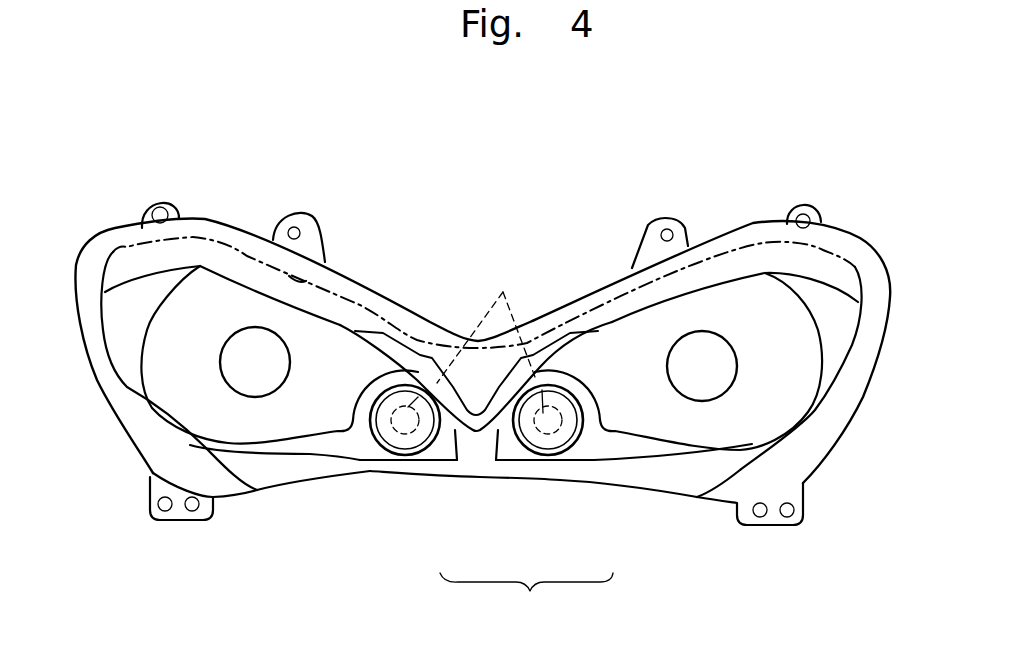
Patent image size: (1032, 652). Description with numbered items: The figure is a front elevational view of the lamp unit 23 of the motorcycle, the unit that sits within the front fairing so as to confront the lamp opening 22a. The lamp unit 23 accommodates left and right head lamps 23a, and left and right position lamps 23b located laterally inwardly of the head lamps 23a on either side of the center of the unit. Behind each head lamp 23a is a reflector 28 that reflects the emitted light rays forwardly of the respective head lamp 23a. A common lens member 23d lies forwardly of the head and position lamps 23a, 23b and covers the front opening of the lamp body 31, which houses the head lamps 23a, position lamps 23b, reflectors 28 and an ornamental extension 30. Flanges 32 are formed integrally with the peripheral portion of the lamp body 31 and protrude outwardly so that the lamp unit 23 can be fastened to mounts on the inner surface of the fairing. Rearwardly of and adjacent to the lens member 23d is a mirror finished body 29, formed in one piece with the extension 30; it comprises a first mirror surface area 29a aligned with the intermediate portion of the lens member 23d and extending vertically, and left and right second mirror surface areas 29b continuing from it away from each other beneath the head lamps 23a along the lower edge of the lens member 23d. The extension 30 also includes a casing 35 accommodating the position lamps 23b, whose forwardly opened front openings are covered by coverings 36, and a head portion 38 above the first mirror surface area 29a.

The lamp opening 22a is at (316, 248).
The lamp unit 23 is at (253, 211).
The head lamps 23a is at (253, 378).
The position lamps 23b is at (503, 292).
The lens member 23d is at (127, 377).
The reflector 28 is at (318, 350).
The mirror finished body 29 is at (526, 600).
The first mirror surface area 29a is at (477, 453).
The second mirror surface areas 29b is at (300, 468).
The extension 30 is at (624, 461).
The lamp body 31 is at (835, 409).
The flanges 32 is at (298, 208).
The casing 35 is at (408, 407).
The coverings 36 is at (405, 440).
The head portion 38 is at (474, 372).